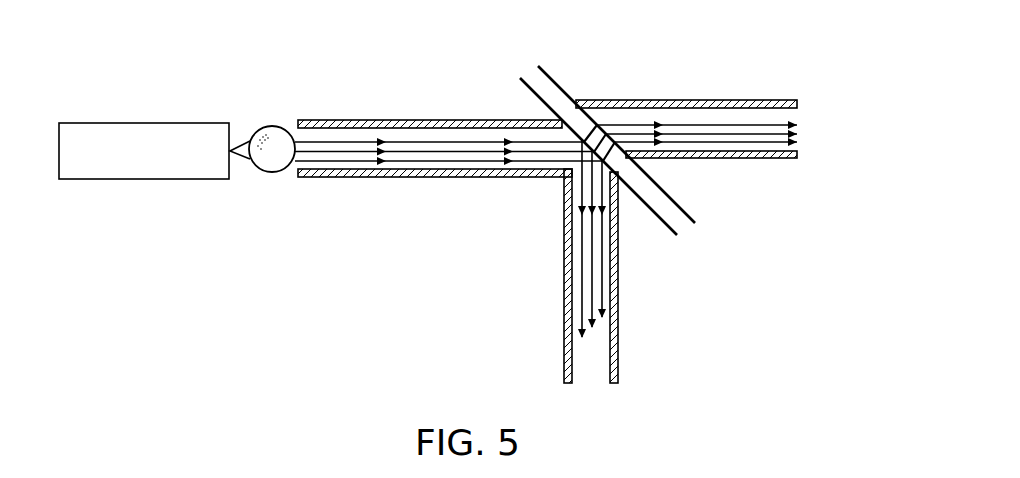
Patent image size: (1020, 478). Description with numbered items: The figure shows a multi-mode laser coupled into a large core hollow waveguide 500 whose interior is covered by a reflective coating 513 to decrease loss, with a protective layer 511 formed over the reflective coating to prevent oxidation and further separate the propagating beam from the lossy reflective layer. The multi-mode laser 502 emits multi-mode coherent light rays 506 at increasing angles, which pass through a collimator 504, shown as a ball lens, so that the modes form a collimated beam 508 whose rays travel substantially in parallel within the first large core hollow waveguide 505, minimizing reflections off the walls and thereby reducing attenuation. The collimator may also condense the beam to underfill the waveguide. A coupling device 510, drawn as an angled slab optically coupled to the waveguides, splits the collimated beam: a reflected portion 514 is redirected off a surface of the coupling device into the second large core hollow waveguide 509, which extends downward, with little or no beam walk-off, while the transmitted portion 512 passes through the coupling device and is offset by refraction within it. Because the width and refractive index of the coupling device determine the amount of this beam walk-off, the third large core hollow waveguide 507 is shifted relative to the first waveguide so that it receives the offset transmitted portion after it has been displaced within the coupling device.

The large core hollow waveguide 500 is at (352, 76).
The multi-mode laser 502 is at (146, 179).
The collimator 504 is at (270, 170).
The multi-mode coherent light rays 506 is at (238, 160).
The first large core hollow waveguide 505 is at (332, 186).
The third large core hollow waveguide 507 is at (770, 185).
The collimated beam 508 is at (433, 143).
The second large core hollow waveguide 509 is at (552, 308).
The coupling device 510 is at (535, 90).
The protective layer 511 is at (386, 121).
The transmitted portion 512 is at (726, 139).
The reflective coating 513 is at (443, 121).
The reflected portion 514 is at (602, 284).